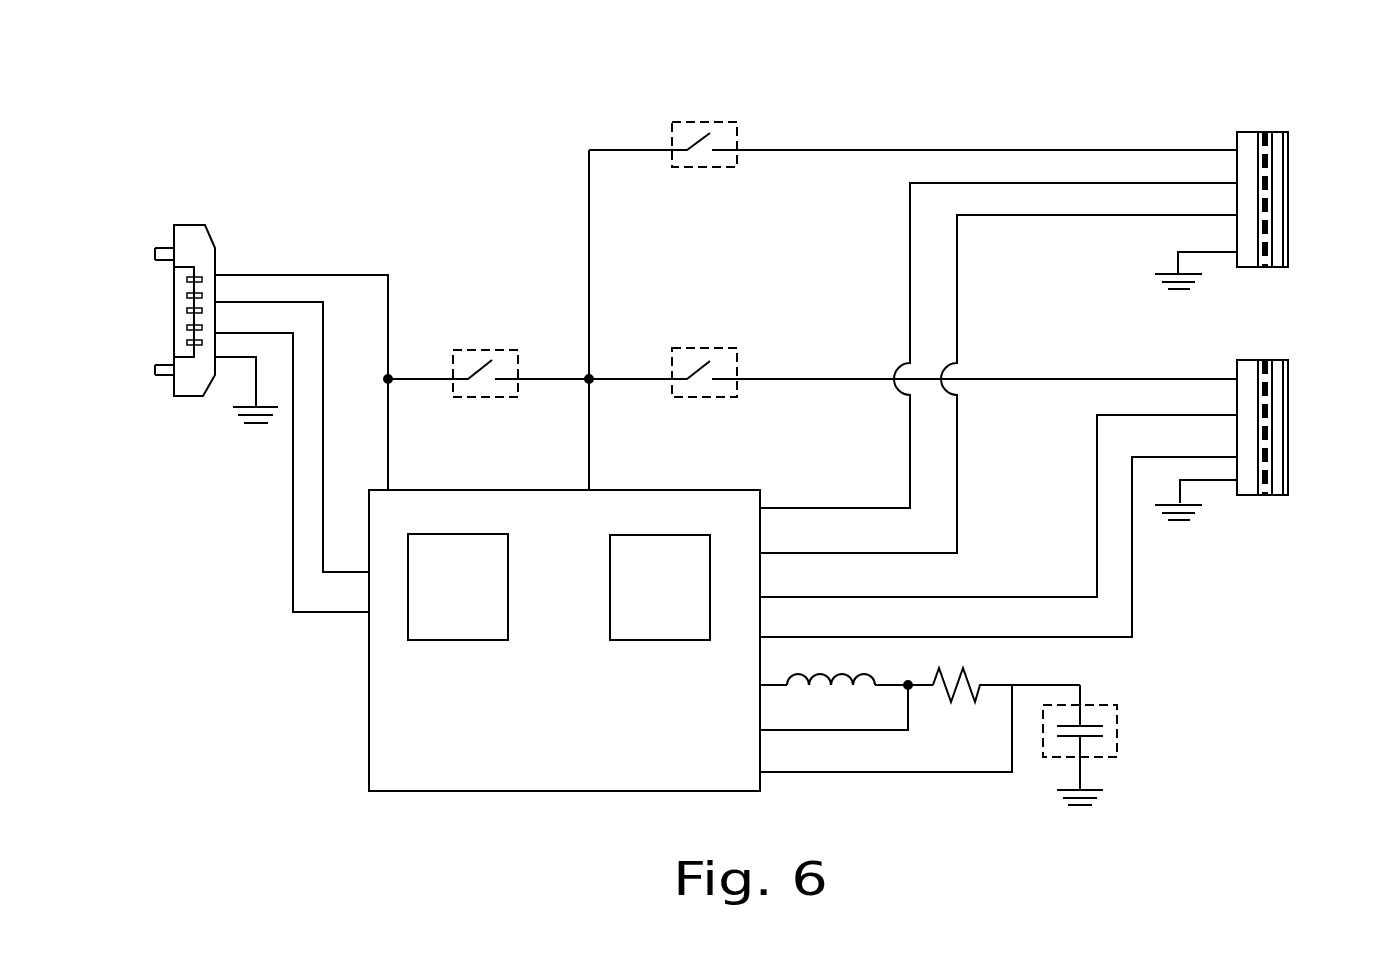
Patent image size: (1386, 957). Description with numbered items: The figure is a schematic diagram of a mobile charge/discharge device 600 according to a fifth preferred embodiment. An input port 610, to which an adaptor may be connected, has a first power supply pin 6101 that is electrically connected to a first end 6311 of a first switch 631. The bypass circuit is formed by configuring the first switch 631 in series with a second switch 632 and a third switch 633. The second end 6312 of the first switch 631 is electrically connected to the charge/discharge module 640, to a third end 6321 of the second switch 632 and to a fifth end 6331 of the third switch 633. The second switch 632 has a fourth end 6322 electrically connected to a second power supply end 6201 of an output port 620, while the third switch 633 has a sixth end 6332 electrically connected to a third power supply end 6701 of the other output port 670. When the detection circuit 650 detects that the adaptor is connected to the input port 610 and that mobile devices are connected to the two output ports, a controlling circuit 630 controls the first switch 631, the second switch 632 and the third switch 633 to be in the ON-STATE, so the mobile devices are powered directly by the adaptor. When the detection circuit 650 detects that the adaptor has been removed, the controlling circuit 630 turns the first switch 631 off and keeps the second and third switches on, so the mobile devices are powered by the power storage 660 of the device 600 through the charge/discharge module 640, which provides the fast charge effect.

The mobile charge/discharge device 600 is at (203, 51).
The input port 610 is at (183, 397).
The first power supply pin 6101 is at (215, 275).
The output port 620 is at (1288, 398).
The second power supply end 6201 is at (1237, 377).
The controlling circuit 630 is at (483, 534).
The first switch 631 is at (495, 350).
The first end 6311 is at (453, 379).
The second end 6312 is at (518, 379).
The second switch 632 is at (712, 348).
The third end 6321 is at (672, 378).
The fourth end 6322 is at (737, 378).
The third switch 633 is at (698, 122).
The fifth end 6331 is at (673, 148).
The sixth end 6332 is at (738, 150).
The charge/discharge module 640 is at (368, 700).
The detection circuit 650 is at (690, 537).
The power storage 660 is at (1117, 728).
The output port 670 is at (1288, 170).
The third power supply end 6701 is at (1237, 148).